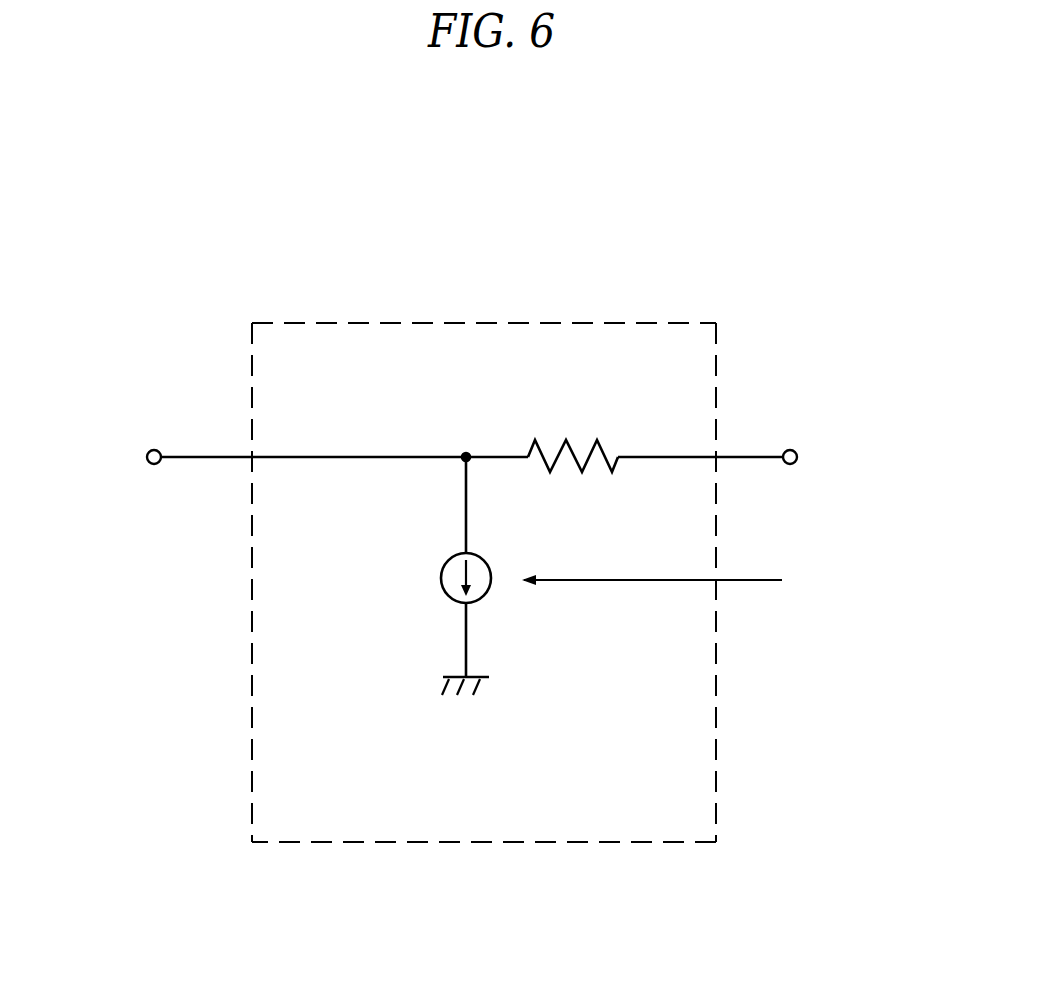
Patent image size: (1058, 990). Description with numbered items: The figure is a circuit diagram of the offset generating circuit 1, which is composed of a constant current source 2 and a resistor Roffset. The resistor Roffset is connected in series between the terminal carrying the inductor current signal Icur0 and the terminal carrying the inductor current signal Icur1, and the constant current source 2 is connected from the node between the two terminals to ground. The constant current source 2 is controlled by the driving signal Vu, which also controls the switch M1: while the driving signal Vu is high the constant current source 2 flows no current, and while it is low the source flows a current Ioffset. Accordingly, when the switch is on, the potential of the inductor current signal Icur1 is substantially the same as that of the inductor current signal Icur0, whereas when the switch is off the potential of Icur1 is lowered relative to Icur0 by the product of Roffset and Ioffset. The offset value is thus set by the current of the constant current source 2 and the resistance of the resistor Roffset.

The offset generating circuit 1 is at (543, 323).
The constant current source 2 is at (489, 568).
The resistor Roffset is at (548, 431).
The inductor current signal Icur1 is at (118, 425).
The inductor current signal Icur0 is at (822, 428).
The offset current Ioffset is at (356, 577).
The driving signal Vu is at (730, 573).